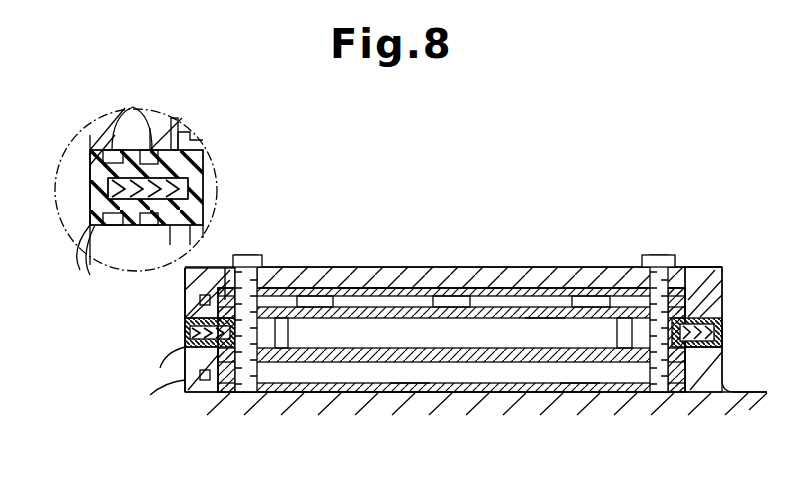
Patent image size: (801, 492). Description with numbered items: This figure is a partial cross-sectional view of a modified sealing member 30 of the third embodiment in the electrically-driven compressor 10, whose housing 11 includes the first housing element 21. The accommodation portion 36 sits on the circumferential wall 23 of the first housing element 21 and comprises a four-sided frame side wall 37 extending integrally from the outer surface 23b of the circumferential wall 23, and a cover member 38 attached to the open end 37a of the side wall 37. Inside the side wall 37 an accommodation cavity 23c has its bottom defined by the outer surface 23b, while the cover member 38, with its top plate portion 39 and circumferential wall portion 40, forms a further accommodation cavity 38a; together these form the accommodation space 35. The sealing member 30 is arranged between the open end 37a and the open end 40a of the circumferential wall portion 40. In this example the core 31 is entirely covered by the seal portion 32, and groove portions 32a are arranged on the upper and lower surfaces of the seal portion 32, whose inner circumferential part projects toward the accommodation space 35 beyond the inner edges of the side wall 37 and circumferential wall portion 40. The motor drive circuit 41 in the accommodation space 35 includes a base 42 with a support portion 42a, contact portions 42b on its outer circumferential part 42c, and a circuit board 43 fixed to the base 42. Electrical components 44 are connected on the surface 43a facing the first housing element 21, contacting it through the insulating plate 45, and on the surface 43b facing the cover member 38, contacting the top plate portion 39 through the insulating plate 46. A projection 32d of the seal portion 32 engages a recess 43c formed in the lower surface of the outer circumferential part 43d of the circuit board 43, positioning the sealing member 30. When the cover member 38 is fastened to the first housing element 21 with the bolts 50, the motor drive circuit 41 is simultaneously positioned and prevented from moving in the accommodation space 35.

The electrically-driven compressor 10 is at (103, 385).
The housing 11 is at (729, 331).
The first housing element 21 is at (725, 330).
The circumferential wall 23 is at (735, 395).
The outer surface 23b is at (742, 374).
The accommodation cavity 23c is at (352, 393).
The sealing member 30 is at (38, 224).
The core 31 is at (95, 240).
The seal portion 32 is at (90, 220).
The groove portion 32a is at (133, 112).
The projection 32d is at (205, 157).
The accommodation space 35 is at (431, 446).
The accommodation portion 36 is at (731, 254).
The side wall 37 is at (95, 255).
The open end 37a is at (88, 262).
The cover member 38 is at (730, 270).
The accommodation cavity 38a is at (407, 300).
The top plate portion 39 is at (478, 290).
The circumferential wall portion 40 is at (90, 128).
The open end 40a is at (86, 152).
The motor drive circuit 41 is at (545, 312).
The base 42 is at (470, 362).
The support portion 42a is at (300, 393).
The contact portion 42b is at (253, 393).
The outer circumferential part 42c is at (672, 393).
The circuit board 43 is at (543, 362).
The surface 43a is at (378, 318).
The surface 43b is at (365, 290).
The recess 43c is at (195, 137).
The outer circumferential part 43d is at (174, 122).
The electrical components 44 is at (322, 298).
The insulating plate 45 is at (575, 393).
The insulating plate 46 is at (510, 306).
The bolts 50 is at (250, 255).